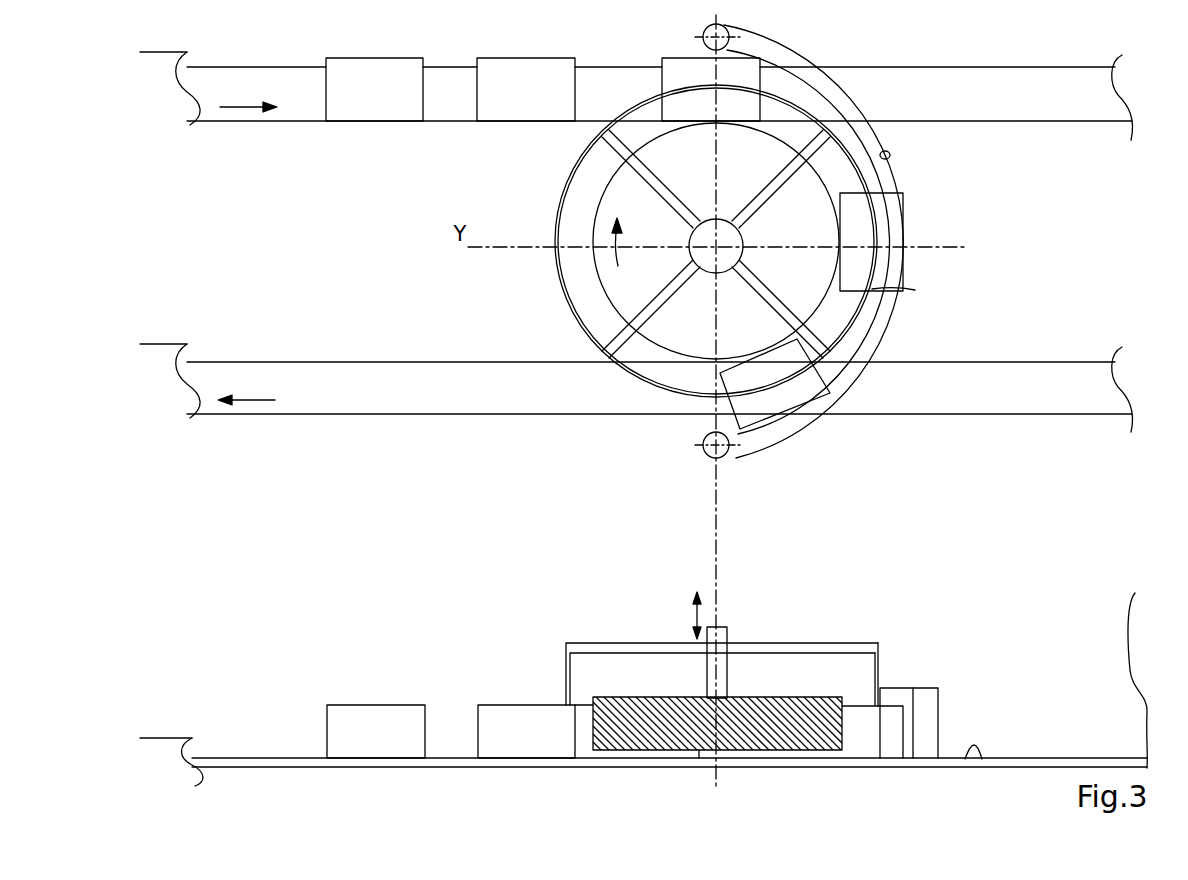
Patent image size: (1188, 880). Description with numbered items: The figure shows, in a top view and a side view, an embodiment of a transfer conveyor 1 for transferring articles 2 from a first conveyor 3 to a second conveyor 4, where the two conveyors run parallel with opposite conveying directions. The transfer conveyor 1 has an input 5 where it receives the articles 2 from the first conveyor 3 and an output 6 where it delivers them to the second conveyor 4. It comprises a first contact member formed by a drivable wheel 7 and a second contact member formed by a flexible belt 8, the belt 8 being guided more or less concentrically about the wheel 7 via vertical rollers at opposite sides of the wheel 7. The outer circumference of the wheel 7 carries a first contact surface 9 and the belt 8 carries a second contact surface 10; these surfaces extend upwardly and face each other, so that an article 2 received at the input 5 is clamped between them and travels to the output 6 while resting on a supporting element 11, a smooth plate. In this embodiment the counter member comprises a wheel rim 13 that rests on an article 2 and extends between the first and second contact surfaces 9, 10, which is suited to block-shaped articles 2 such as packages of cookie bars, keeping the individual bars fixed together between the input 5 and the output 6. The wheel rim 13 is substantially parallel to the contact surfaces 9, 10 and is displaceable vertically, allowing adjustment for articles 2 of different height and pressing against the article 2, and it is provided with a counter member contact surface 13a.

The transfer conveyor 1 is at (1048, 175).
The articles 2 is at (360, 107).
The first conveyor 3 is at (284, 107).
The second conveyor 4 is at (280, 370).
The input 5 is at (690, 73).
The output 6 is at (727, 421).
The drivable wheel 7 is at (628, 185).
The flexible belt 8 is at (852, 382).
The first contact surface 9 is at (593, 223).
The second contact surface 10 is at (890, 153).
The supporting element 11 is at (977, 752).
The wheel rim 13 is at (878, 647).
The counter member contact surface 13a is at (878, 707).